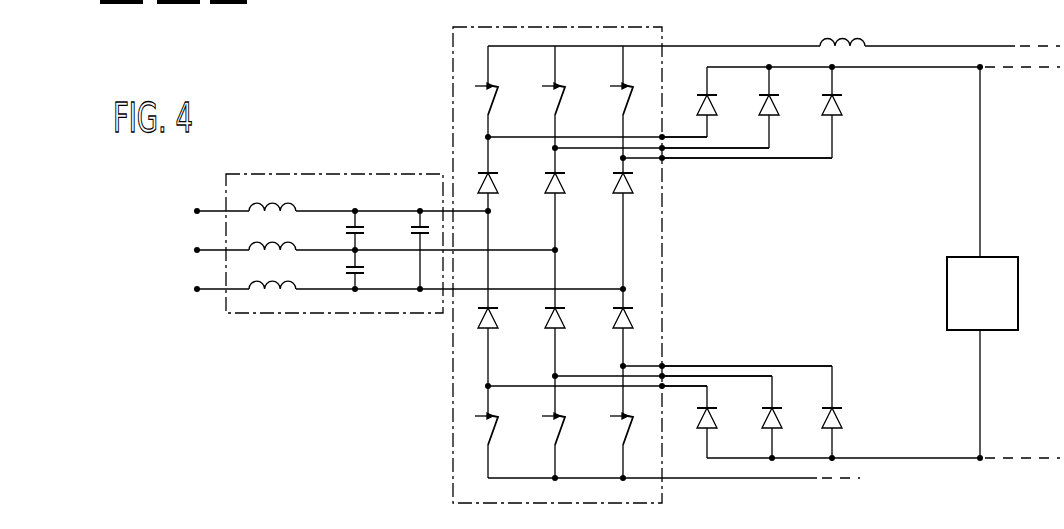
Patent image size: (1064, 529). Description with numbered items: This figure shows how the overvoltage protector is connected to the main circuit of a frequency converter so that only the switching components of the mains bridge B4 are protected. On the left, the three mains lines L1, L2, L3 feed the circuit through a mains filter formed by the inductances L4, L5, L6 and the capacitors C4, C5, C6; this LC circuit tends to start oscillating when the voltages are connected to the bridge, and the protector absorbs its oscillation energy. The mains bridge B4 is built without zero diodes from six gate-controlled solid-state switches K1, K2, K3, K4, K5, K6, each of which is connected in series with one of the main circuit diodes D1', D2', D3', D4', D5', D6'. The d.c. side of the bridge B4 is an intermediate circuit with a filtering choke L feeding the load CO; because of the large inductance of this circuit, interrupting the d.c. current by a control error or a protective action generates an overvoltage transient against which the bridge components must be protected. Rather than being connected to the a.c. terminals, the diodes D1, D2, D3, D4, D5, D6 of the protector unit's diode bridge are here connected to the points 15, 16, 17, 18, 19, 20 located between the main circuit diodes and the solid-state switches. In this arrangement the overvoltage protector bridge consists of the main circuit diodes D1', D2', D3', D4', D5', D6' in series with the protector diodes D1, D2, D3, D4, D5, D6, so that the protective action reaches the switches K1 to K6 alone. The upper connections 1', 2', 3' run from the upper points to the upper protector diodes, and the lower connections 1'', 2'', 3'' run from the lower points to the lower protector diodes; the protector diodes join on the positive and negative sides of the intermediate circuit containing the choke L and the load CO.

The mains bridge B4 is at (440, 58).
The mains line L1 is at (326, 212).
The mains line L2 is at (360, 251).
The mains line L3 is at (394, 290).
The mains filter inductance L4 is at (262, 200).
The mains filter inductance L5 is at (262, 239).
The mains filter inductance L6 is at (262, 278).
The mains filter capacitor C4 is at (341, 230).
The mains filter capacitor C5 is at (406, 250).
The mains filter capacitor C6 is at (341, 271).
The solid-state switch K1 is at (496, 107).
The solid-state switch K2 is at (496, 440).
The solid-state switch K3 is at (563, 107).
The solid-state switch K4 is at (563, 440).
The solid-state switch K5 is at (631, 107).
The solid-state switch K6 is at (631, 440).
The main circuit diode D1' is at (501, 196).
The main circuit diode D2' is at (501, 332).
The main circuit diode D3' is at (568, 196).
The main circuit diode D4' is at (568, 332).
The main circuit diode D5' is at (636, 196).
The main circuit diode D6' is at (636, 332).
The protector diode D1 is at (717, 103).
The protector diode D2 is at (717, 422).
The protector diode D3 is at (779, 107).
The protector diode D4 is at (782, 417).
The protector diode D5 is at (842, 112).
The protector diode D6 is at (842, 412).
The connection point 15 is at (596, 148).
The connection point 16 is at (584, 384).
The connection point 17 is at (660, 158).
The connection point 18 is at (650, 368).
The connection point 19 is at (714, 159).
The connection point 20 is at (714, 359).
The excitation limit point 1' is at (687, 166).
The cut-off value point 2' is at (715, 183).
The upper connection line 3' is at (747, 202).
The lower connection line 1'' is at (747, 328).
The lower connection line 2'' is at (717, 344).
The lower connection line 3'' is at (692, 360).
The filtering choke L is at (842, 28).
The output load CO is at (982, 293).